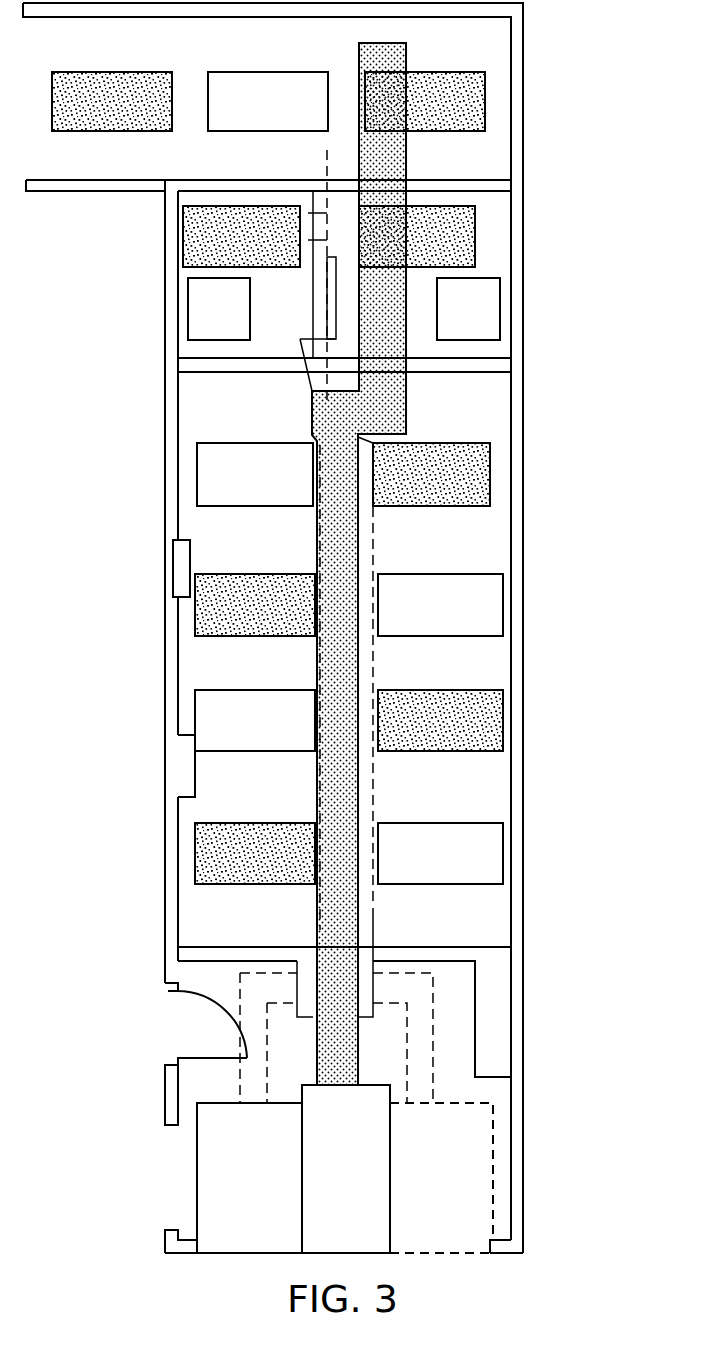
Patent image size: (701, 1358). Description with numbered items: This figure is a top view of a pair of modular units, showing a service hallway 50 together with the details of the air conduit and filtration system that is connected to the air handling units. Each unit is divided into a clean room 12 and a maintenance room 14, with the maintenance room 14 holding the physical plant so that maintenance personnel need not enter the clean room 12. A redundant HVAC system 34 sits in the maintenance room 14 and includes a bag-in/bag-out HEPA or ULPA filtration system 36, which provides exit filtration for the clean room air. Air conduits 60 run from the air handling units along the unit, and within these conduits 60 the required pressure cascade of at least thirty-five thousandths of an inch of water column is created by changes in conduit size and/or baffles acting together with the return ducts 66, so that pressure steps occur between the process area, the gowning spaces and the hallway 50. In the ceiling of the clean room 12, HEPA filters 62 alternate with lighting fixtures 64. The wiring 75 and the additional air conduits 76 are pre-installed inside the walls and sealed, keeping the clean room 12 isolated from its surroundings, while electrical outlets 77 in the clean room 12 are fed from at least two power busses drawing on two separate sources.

The clean room 12 is at (540, 461).
The maintenance room 14 is at (386, 1113).
The redundant HVAC system 34 is at (233, 1193).
The bag-in/bag-out filtration system 36 is at (330, 1182).
The service hallway 50 is at (470, 49).
The air conduits 60 is at (358, 428).
The HEPA filters 62 is at (240, 735).
The lighting fixtures 64 is at (455, 735).
The return ducts 66 is at (388, 296).
The wiring 75 is at (515, 655).
The air conduits 76 is at (515, 716).
The electrical outlets 77 is at (172, 543).